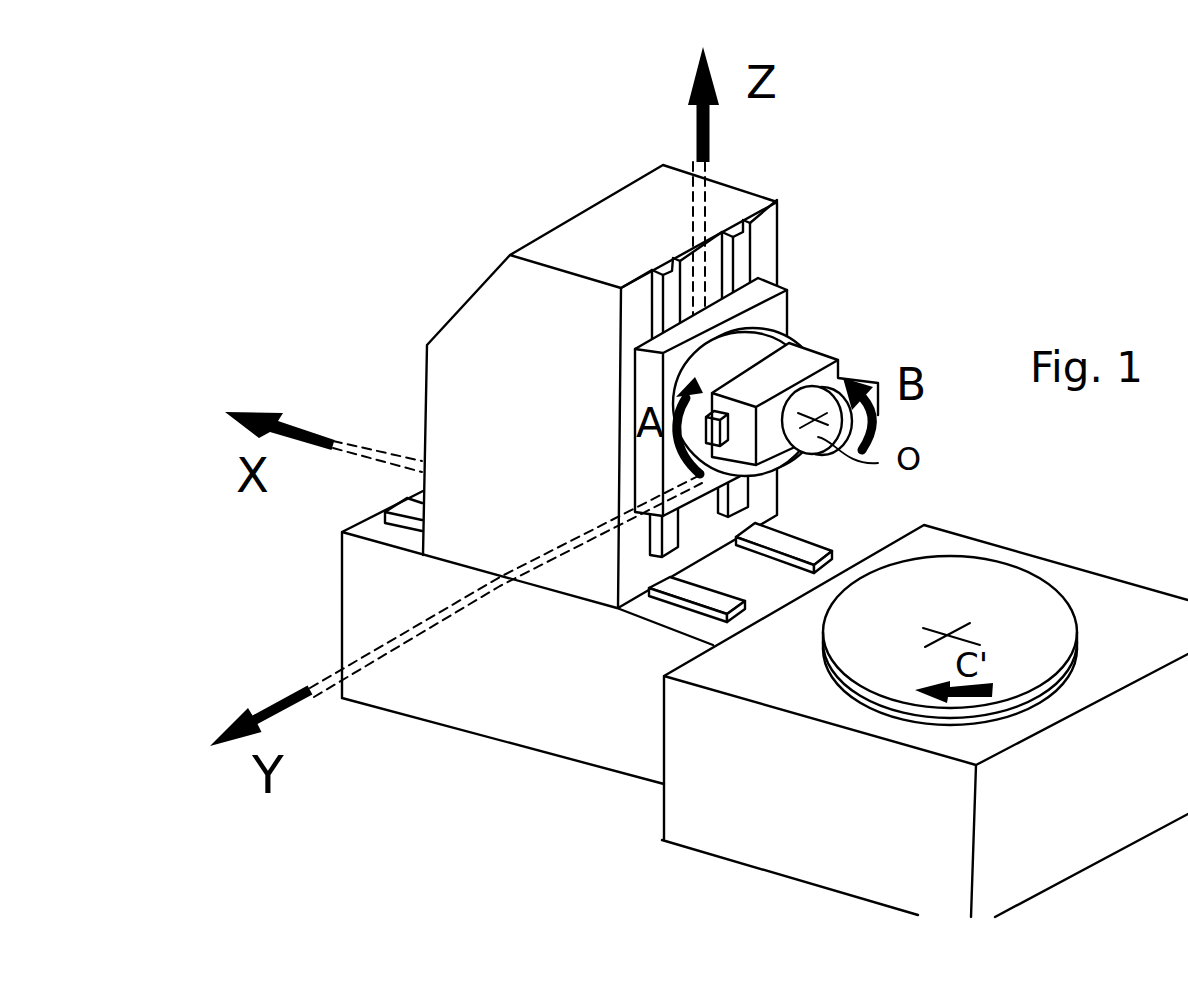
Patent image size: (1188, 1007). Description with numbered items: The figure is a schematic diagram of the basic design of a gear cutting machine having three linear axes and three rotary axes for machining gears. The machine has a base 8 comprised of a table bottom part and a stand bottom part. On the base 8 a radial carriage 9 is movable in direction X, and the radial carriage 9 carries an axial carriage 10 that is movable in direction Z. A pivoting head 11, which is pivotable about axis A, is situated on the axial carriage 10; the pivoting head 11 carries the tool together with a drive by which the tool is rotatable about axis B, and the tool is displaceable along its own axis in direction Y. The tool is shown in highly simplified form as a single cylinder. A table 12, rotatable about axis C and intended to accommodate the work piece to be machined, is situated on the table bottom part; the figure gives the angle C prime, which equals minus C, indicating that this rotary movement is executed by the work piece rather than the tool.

The base 8 is at (682, 742).
The radial carriage 9 is at (483, 388).
The axial carriage 10 is at (772, 315).
The pivoting head 11 is at (757, 352).
The table 12 is at (1024, 620).